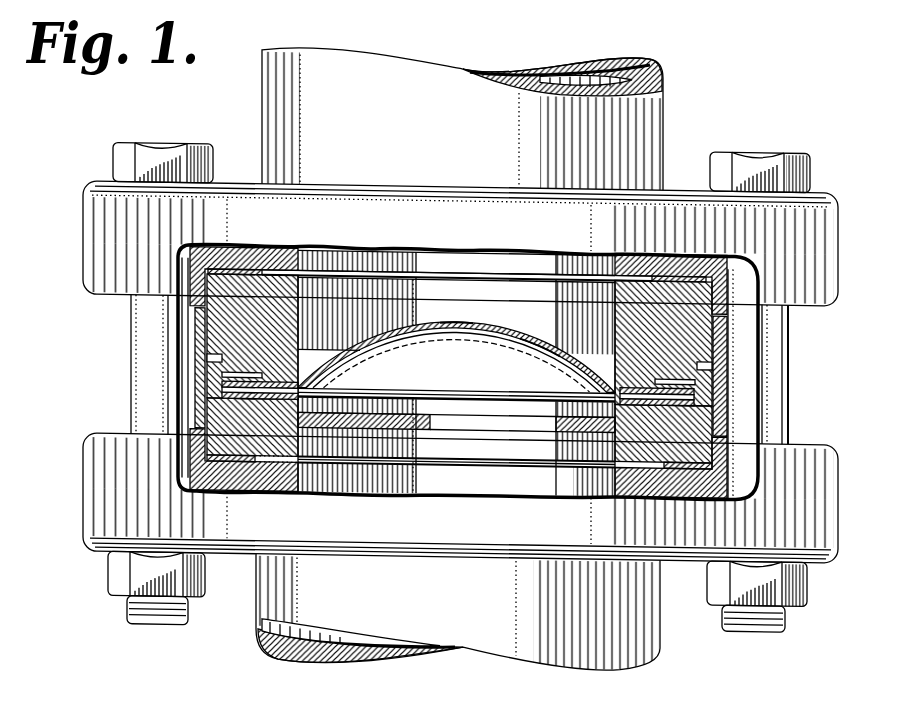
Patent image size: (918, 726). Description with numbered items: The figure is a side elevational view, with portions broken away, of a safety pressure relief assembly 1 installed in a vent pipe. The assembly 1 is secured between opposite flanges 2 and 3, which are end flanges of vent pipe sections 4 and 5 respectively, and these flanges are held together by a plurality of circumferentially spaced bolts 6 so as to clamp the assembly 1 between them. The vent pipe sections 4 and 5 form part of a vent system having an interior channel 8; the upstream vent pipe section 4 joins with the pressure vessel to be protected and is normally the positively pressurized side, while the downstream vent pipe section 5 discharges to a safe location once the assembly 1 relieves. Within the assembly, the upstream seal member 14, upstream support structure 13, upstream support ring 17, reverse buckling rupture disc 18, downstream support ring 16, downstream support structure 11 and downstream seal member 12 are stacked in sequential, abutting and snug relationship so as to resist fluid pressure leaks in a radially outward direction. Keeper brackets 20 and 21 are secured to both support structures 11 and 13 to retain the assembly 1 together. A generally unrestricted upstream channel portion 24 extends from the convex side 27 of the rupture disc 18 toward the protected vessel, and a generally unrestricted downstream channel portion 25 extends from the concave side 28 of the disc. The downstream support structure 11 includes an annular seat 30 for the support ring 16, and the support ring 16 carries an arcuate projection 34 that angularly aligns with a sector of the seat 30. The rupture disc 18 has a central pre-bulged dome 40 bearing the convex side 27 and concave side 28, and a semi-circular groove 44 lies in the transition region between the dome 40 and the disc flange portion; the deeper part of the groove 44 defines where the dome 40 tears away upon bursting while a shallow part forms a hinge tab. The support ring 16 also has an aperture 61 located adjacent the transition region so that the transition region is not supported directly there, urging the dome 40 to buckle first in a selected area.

The safety pressure relief assembly 1 is at (97, 386).
The flange 2 is at (83, 255).
The flange 3 is at (83, 517).
The vent pipe section 4 is at (476, 107).
The vent pipe section 5 is at (437, 617).
The bolt 6 is at (205, 155).
The interior channel 8 is at (562, 61).
The downstream support structure 11 is at (255, 466).
The downstream seal member 12 is at (458, 464).
The upstream support structure 13 is at (242, 275).
The upstream seal member 14 is at (278, 271).
The downstream support ring 16 is at (675, 411).
The upstream support ring 17 is at (667, 385).
The reverse buckling rupture disc 18 is at (527, 324).
The keeper bracket 20 is at (210, 329).
The keeper bracket 21 is at (712, 321).
The upstream channel portion 24 is at (545, 69).
The downstream channel portion 25 is at (386, 633).
The convex side 27 is at (540, 344).
The concave side 28 is at (505, 334).
The annular seat 30 is at (253, 403).
The arcuate projection 34 is at (560, 419).
The dome 40 is at (464, 318).
The semi-circular groove 44 is at (288, 381).
The aperture 61 is at (608, 423).